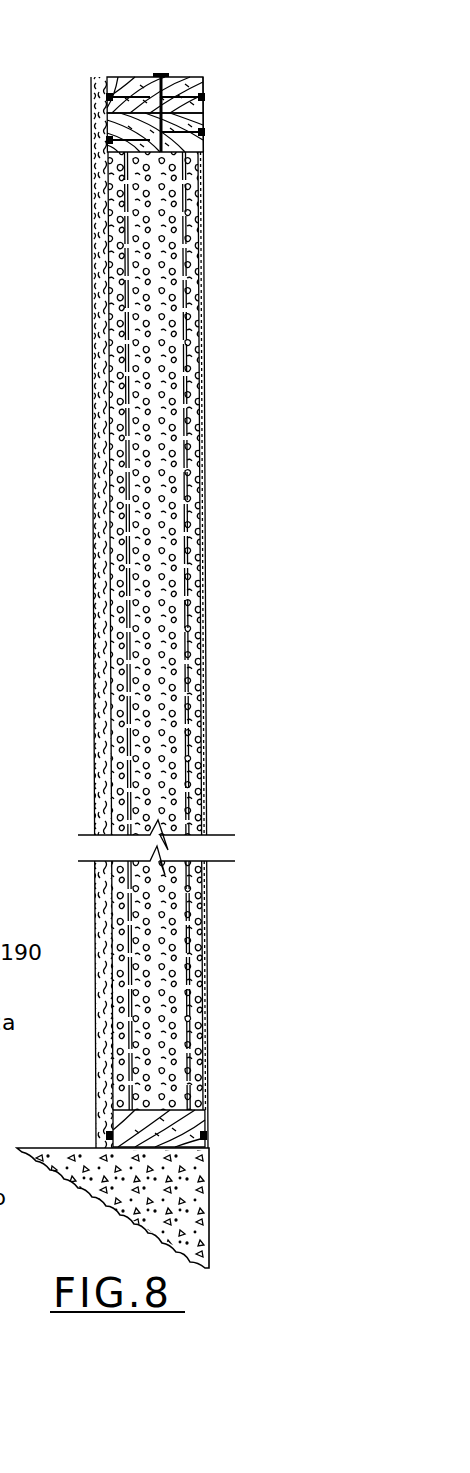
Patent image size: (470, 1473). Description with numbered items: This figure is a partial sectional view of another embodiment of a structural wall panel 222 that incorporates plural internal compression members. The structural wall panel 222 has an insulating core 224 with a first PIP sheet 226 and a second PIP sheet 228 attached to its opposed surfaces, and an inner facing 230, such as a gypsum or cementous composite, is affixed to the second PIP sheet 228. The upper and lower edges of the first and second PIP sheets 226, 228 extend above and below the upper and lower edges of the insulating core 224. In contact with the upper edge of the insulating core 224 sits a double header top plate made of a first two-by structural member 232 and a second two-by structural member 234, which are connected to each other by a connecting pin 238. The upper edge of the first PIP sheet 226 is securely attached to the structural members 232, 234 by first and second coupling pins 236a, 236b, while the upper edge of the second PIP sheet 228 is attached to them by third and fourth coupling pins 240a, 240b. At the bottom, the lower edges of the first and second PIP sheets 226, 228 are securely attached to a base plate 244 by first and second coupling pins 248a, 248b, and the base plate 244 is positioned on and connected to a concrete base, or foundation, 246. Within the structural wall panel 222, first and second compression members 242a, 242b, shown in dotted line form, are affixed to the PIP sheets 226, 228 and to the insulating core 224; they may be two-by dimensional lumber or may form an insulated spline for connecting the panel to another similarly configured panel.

The structural wall panel 222 is at (204, 232).
The insulating core 224 is at (168, 316).
The first PIP sheet 226 is at (200, 363).
The second PIP sheet 228 is at (105, 332).
The inner facing 230 is at (97, 447).
The first 2× structural member 232 is at (173, 82).
The second 2× structural member 234 is at (178, 145).
The first coupling pin 236a is at (193, 80).
The second coupling pin 236b is at (200, 114).
The connecting pin 238 is at (161, 74).
The third coupling pin 240a is at (122, 95).
The fourth coupling pin 240b is at (105, 145).
The first compression member 242a is at (196, 628).
The second compression member 242b is at (110, 645).
The base plate 244 is at (177, 1138).
The concrete base, or foundation 246 is at (187, 1208).
The first coupling pin 248a is at (203, 1112).
The second coupling pin 248b is at (108, 1137).